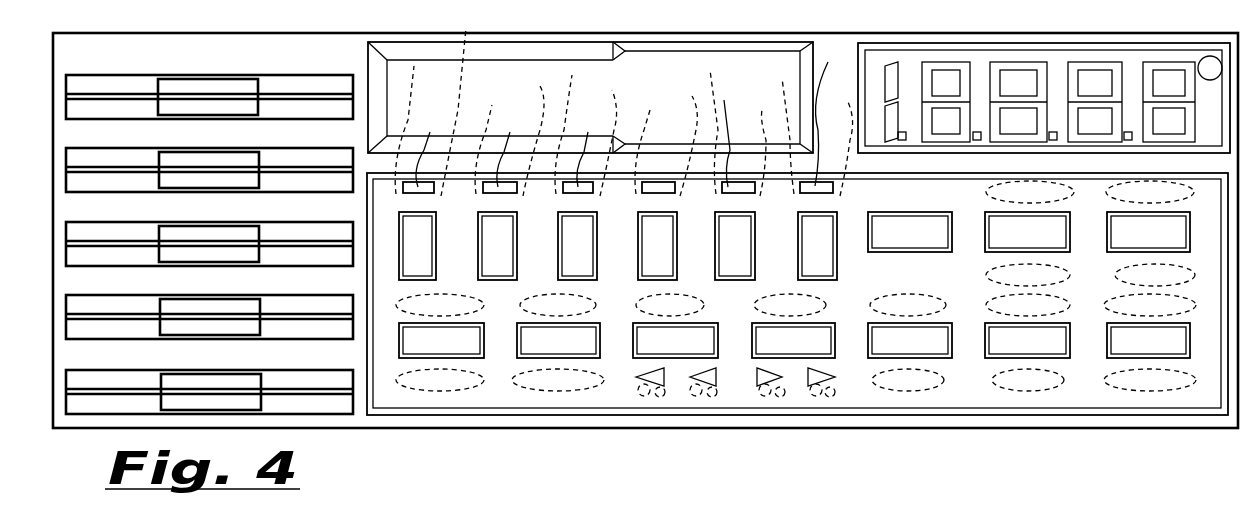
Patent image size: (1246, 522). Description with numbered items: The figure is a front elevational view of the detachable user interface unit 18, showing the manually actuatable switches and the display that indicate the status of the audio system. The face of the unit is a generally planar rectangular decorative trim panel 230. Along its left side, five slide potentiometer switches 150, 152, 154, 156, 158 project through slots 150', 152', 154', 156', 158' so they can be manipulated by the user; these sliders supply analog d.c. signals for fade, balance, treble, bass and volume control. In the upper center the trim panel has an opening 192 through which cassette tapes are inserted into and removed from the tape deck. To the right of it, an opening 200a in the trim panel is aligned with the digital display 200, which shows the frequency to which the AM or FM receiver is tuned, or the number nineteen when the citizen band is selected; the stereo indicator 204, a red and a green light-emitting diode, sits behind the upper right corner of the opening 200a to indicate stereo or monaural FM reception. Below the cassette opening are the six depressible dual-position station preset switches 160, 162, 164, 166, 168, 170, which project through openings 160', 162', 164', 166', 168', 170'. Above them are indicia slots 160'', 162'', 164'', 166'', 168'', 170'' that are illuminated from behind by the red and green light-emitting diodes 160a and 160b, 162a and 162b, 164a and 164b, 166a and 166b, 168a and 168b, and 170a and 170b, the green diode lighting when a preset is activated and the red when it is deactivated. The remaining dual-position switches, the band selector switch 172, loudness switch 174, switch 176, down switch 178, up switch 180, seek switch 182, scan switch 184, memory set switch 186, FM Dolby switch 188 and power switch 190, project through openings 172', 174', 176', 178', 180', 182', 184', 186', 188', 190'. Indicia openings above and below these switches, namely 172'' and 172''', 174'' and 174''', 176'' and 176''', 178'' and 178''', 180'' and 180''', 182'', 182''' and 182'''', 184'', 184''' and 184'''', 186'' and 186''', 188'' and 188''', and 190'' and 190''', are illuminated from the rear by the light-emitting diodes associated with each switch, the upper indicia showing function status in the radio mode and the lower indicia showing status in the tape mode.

The detachable user interface unit 18 is at (1237, 428).
The decorative trim panel 230 is at (355, 37).
The slide potentiometer switch 150 is at (208, 72).
The slot 150' is at (206, 74).
The slide potentiometer switch 152 is at (209, 145).
The slot 152' is at (207, 147).
The slide potentiometer switch 154 is at (210, 219).
The slot 154' is at (208, 221).
The slide potentiometer switch 156 is at (210, 292).
The slot 156' is at (208, 294).
The slide potentiometer switch 158 is at (211, 367).
The slot 158' is at (208, 369).
The opening 192 is at (434, 58).
The station preset switch 160 is at (437, 231).
The opening 160' is at (439, 246).
The indicia slot 160'' is at (424, 150).
The red light-emitting diode 160a is at (416, 130).
The green light-emitting diode 160b is at (467, 101).
The station preset switch 162 is at (516, 231).
The opening 162' is at (518, 246).
The indicia slot 162'' is at (511, 150).
The red light-emitting diode 162a is at (499, 141).
The green light-emitting diode 162b is at (522, 129).
The station preset switch 164 is at (596, 231).
The opening 164' is at (598, 246).
The indicia slot 164'' is at (582, 150).
The red light-emitting diode 164a is at (585, 128).
The green light-emitting diode 164b is at (592, 142).
The station preset switch 166 is at (676, 231).
The opening 166' is at (678, 246).
The indicia slot 166'' is at (682, 206).
The red light-emitting diode 166a is at (660, 152).
The green light-emitting diode 166b is at (672, 143).
The station preset switch 168 is at (753, 231).
The opening 168' is at (755, 246).
The indicia slot 168'' is at (739, 134).
The red light-emitting diode 168a is at (695, 128).
The green light-emitting diode 168b is at (755, 153).
The station preset switch 170 is at (835, 231).
The opening 170' is at (837, 246).
The indicia slot 170'' is at (839, 114).
The red light-emitting diode 170a is at (785, 127).
The green light-emitting diode 170b is at (840, 139).
The CB/AM/FM selector switch 172 is at (910, 232).
The opening 172' is at (977, 108).
The indicia 172'' is at (867, 105).
The indicia 172''' is at (928, 104).
The loudness switch 174 is at (1027, 232).
The opening 174' is at (1122, 176).
The indicia 174'' is at (1030, 176).
The indicia 174''' is at (1051, 268).
The frequency selection/tape bias switch 176 is at (1148, 232).
The opening 176' is at (1205, 177).
The indicia 176'' is at (1135, 167).
The indicia 176''' is at (1133, 279).
The down switch 178 is at (441, 340).
The opening 178' is at (427, 393).
The indicia 178'' is at (440, 294).
The indicia 178''' is at (440, 424).
The up switch 180 is at (558, 340).
The opening 180' is at (571, 398).
The indicia 180'' is at (557, 294).
The indicia 180''' is at (558, 417).
The seek switch 182 is at (675, 340).
The opening 182' is at (644, 409).
The indicia 182'' is at (652, 295).
The indicia 182''' is at (700, 422).
The indicia 182'''' is at (701, 387).
The scan switch 184 is at (793, 340).
The opening 184' is at (836, 387).
The indicia 184'' is at (790, 295).
The indicia 184''' is at (762, 423).
The indicia 184'''' is at (859, 422).
The memory set switch 186 is at (910, 340).
The opening 186' is at (939, 387).
The indicia 186'' is at (935, 422).
The indicia 186''' is at (908, 289).
The FM Dolby switch 188 is at (1027, 340).
The opening 188' is at (1043, 387).
The indicia 188'' is at (1010, 295).
The indicia 188''' is at (1049, 420).
The power switch 190 is at (1148, 340).
The opening 190' is at (1145, 397).
The indicia 190'' is at (1150, 410).
The indicia 190''' is at (1136, 315).
The digital display 200 is at (1014, 36).
The opening 200a is at (1106, 45).
The stereo indicator 204 is at (1212, 52).